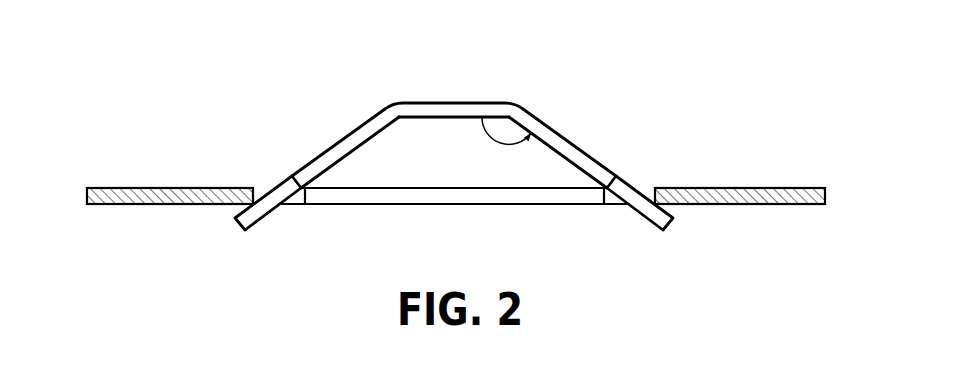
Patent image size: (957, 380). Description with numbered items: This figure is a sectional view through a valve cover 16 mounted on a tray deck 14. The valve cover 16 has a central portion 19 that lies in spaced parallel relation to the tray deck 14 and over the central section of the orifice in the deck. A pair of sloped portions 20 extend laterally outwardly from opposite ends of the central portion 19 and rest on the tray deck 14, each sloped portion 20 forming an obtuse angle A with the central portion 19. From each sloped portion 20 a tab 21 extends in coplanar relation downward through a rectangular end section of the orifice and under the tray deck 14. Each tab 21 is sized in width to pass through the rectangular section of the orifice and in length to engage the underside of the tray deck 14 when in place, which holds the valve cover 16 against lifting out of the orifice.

The tray deck 14 is at (180, 188).
The valve cover 16 is at (454, 146).
The central portion 19 is at (437, 108).
The sloped portions 20 is at (355, 138).
The tabs 21 is at (272, 200).